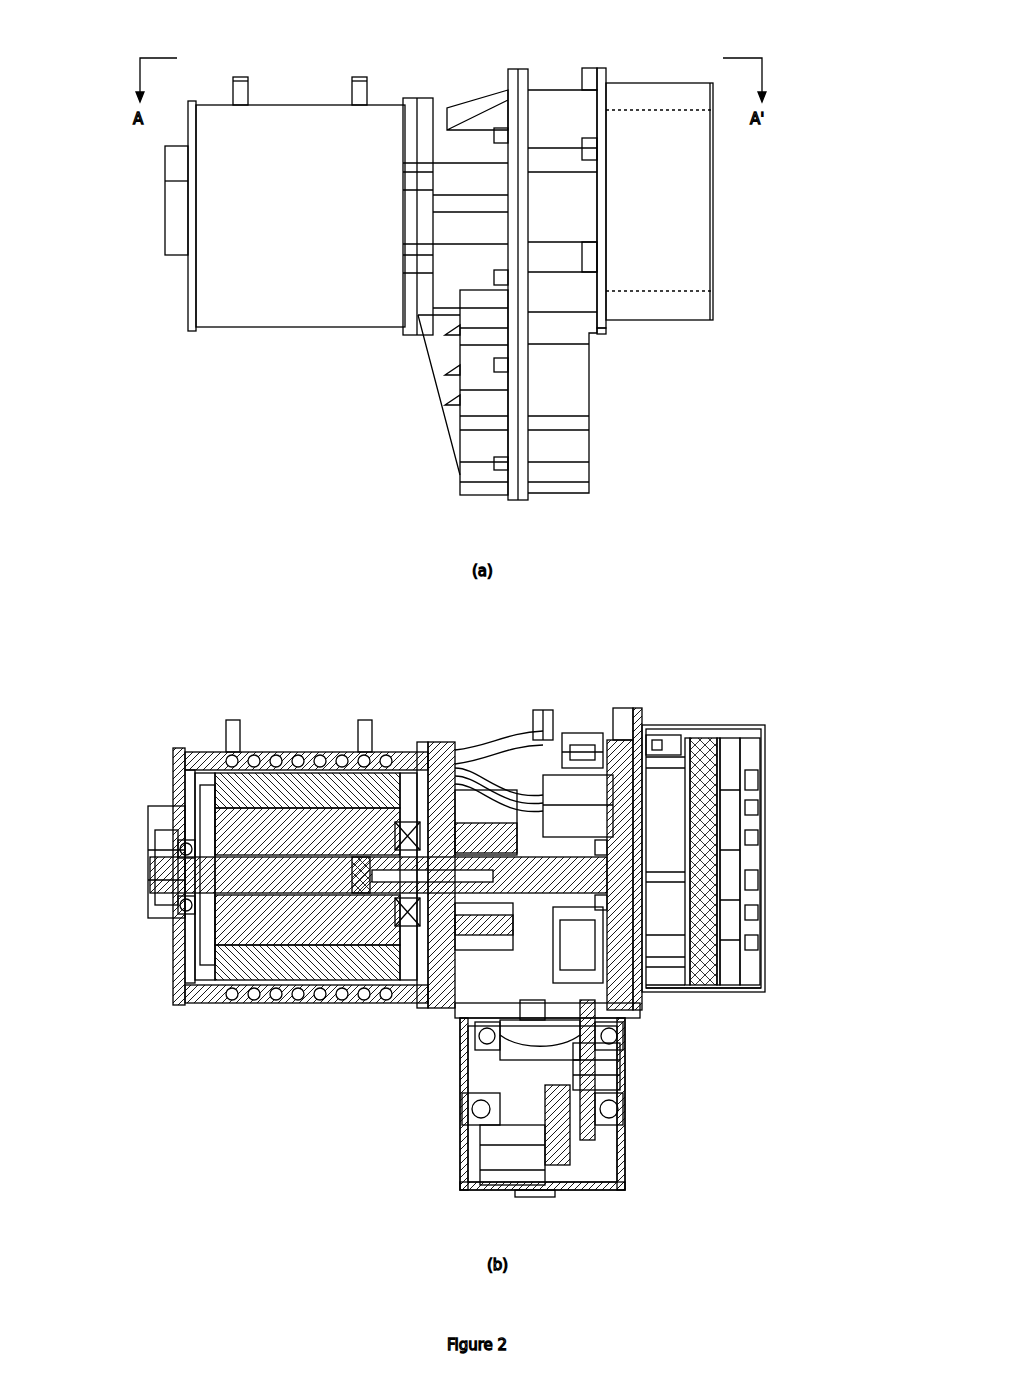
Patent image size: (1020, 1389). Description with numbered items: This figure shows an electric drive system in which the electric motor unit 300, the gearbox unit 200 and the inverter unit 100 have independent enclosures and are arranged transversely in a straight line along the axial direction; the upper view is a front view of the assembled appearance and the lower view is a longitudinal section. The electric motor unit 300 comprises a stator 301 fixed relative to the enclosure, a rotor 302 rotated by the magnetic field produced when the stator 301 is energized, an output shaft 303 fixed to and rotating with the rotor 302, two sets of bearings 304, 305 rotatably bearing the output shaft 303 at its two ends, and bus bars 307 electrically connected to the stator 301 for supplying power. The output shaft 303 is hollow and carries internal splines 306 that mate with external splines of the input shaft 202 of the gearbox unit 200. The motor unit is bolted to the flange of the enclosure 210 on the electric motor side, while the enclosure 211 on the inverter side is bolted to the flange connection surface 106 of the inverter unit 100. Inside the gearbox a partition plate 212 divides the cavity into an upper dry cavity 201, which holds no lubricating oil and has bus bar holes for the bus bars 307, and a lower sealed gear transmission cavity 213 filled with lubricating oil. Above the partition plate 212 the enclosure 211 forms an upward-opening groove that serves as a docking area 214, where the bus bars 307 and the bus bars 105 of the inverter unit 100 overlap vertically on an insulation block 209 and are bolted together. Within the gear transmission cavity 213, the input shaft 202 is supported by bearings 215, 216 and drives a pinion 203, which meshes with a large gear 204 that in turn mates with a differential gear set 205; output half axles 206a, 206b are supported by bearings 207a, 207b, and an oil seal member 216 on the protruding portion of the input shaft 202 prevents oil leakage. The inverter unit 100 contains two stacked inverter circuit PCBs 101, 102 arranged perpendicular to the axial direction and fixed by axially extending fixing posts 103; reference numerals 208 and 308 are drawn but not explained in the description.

The inverter unit 100 is at (672, 120).
The inverter circuit PCB 101 is at (720, 790).
The inverter circuit PCB 102 is at (740, 830).
The fixing posts 103 is at (690, 750).
The bus bars of the inverter unit 105 is at (690, 760).
The flange connection surface of the inverter unit 106 is at (600, 80).
The gearbox unit 200 is at (555, 100).
The dry cavity 201 is at (495, 740).
The input shaft 202 is at (700, 985).
The pinion 203 is at (500, 1035).
The large gear 204 is at (620, 1066).
The differential gear set 205 is at (480, 1150).
The output half axle 206a is at (487, 1050).
The output half axle 206b is at (615, 1045).
The bearing 207a is at (475, 1118).
The bearing 207b is at (615, 1110).
The end plate 208 is at (362, 1000).
The insulation block 209 is at (575, 740).
The enclosure on the electric motor side 210 is at (427, 98).
The enclosure on the inverter side 211 is at (598, 75).
The partition plate 212 is at (540, 745).
The gear transmission cavity 213 is at (690, 950).
The docking area 214 is at (605, 735).
The bearing 215 is at (395, 1000).
The oil seal member 216 is at (582, 802).
The electric motor unit 300 is at (277, 115).
The stator 301 is at (208, 790).
The rotor 302 is at (175, 790).
The output shaft 303 is at (178, 904).
The bearing 304 is at (155, 836).
The bearing 305 is at (350, 752).
The internal splines 306 is at (300, 752).
The bus bars of the electric motor unit 307 is at (478, 750).
The mounting flange 308 is at (407, 98).